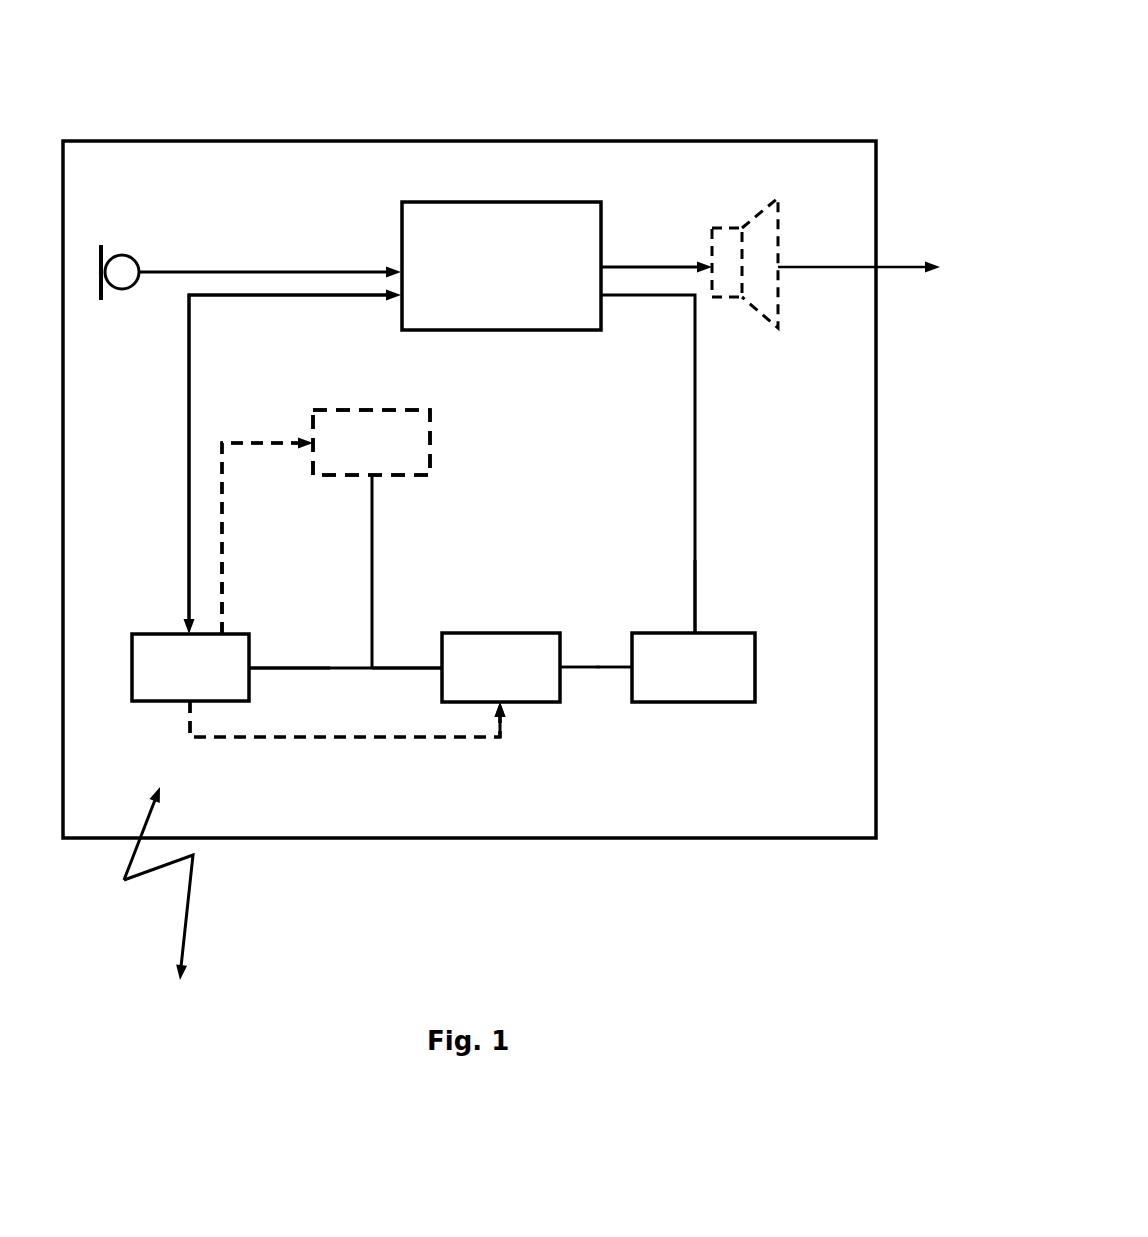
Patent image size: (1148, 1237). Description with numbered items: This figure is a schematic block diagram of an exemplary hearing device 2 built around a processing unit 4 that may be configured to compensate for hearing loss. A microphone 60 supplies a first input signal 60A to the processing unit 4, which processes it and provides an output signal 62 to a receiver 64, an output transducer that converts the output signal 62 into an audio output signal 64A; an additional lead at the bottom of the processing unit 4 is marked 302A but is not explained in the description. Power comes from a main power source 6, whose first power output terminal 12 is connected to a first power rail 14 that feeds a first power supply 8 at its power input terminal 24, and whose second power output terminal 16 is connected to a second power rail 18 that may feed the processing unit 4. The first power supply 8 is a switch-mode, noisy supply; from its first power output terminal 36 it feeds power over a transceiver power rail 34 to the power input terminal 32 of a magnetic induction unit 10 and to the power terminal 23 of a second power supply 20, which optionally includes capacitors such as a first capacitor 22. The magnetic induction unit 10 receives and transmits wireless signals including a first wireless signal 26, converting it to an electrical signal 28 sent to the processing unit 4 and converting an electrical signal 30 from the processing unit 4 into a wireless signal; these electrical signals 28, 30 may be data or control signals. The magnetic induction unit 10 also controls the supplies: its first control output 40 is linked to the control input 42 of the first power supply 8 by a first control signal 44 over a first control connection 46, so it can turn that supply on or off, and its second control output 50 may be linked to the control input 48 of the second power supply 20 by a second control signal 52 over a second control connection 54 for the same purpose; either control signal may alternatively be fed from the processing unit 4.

The hearing device 2 is at (693, 115).
The processing unit 4 is at (481, 202).
The main power source 6 is at (755, 640).
The first power supply 8 is at (515, 633).
The magnetic induction unit 10 is at (153, 633).
The first power output terminal 12 is at (630, 668).
The first power rail 14 is at (595, 668).
The second power output terminal 16 is at (697, 632).
The second power rail 18 is at (695, 507).
The second power supply 20 is at (343, 410).
The first capacitor 22 is at (371, 442).
The power terminal 23 is at (378, 478).
The power input terminal 24 is at (562, 666).
The first wireless signal 26 is at (180, 923).
The electrical signal 28 is at (189, 393).
The electrical signal 30 is at (288, 457).
The power input terminal 32 is at (250, 668).
The transceiver power rail 34 is at (333, 668).
The first power output terminal 36 is at (442, 668).
The first control output 40 is at (190, 702).
The control input 42 is at (505, 703).
The first control signal 44 is at (303, 737).
The first control connection 46 is at (345, 719).
The control input 48 is at (313, 440).
The second control output 50 is at (223, 633).
The second control signal 52 is at (223, 548).
The second control connection 54 is at (261, 538).
The microphone 60 is at (123, 256).
The first input signal 60A is at (262, 272).
The output signal 62 is at (653, 263).
The receiver 64 is at (747, 230).
The audio output signal 64A is at (862, 265).
The processor output connection 302A is at (482, 330).